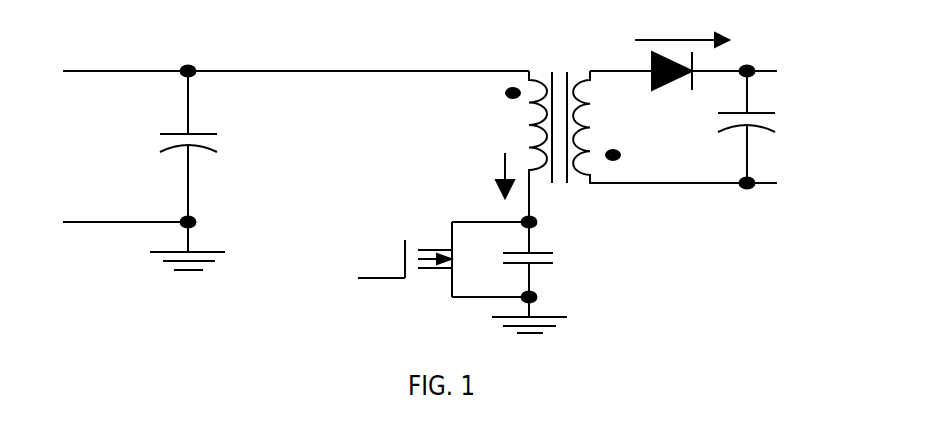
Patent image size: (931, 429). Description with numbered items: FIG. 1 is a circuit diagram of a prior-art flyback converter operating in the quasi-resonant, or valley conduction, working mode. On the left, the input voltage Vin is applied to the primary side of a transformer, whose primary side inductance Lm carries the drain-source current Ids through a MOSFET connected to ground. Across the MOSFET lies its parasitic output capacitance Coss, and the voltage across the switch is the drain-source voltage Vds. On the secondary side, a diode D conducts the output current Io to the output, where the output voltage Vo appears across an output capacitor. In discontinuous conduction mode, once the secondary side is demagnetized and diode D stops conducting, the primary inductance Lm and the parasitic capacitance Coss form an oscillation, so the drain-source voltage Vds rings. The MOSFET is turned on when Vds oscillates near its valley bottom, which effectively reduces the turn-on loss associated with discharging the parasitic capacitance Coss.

The input voltage source / input capacitor Vin is at (165, 168).
The primary side inductance Lm is at (514, 146).
The drain-source current Ids is at (497, 185).
The output diode D is at (670, 85).
The output current Io is at (694, 44).
The output voltage / output capacitor Vo is at (762, 127).
The parasitic capacitance of MOSFET Coss is at (462, 275).
The drain-source voltage Vds is at (575, 257).